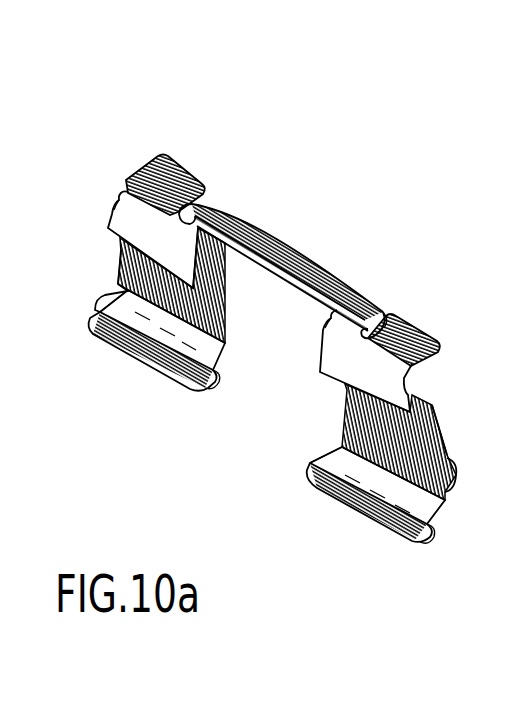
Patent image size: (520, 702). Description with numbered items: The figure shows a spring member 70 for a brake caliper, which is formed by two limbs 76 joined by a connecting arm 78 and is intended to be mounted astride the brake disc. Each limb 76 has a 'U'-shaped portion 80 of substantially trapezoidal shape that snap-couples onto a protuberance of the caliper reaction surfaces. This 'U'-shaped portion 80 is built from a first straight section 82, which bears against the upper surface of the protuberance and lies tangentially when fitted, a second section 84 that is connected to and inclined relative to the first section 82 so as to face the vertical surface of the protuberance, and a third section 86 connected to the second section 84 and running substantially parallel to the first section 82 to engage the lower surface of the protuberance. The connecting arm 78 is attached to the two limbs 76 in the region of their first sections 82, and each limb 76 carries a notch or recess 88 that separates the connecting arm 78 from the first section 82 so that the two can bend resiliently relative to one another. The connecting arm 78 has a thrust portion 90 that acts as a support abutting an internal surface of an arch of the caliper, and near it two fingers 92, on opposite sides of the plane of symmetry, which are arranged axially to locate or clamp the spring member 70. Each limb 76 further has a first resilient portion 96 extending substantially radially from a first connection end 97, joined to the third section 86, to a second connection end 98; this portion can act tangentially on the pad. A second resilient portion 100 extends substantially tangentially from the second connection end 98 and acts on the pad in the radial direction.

The spring member 70 is at (204, 124).
The limb 76 is at (107, 353).
The connecting arm 78 is at (287, 230).
The U-shaped portion 80 is at (121, 181).
The first section 82 is at (152, 164).
The second section 84 is at (122, 185).
The third section 86 is at (230, 262).
The notch or recess 88 is at (207, 195).
The thrust portion 90 is at (247, 222).
The finger 92 is at (369, 322).
The first resilient portion 96 is at (123, 293).
The first connection end 97 is at (120, 246).
The second connection end 98 is at (208, 384).
The second resilient portion 100 is at (140, 375).